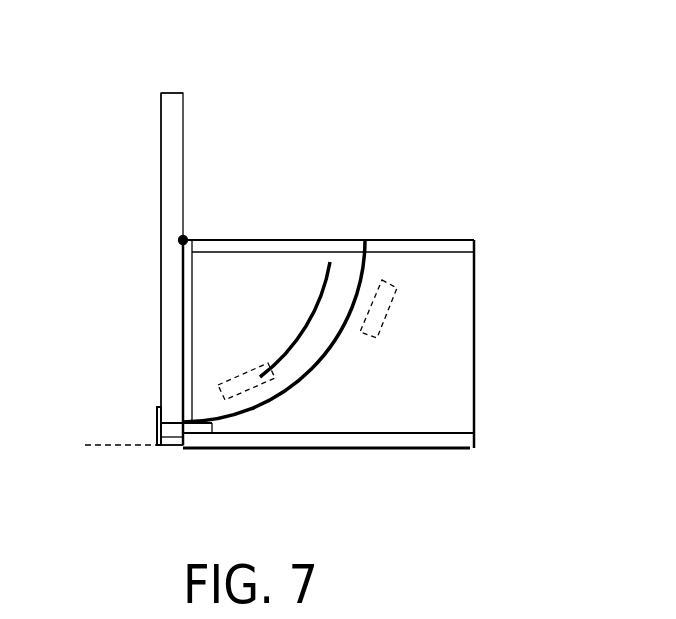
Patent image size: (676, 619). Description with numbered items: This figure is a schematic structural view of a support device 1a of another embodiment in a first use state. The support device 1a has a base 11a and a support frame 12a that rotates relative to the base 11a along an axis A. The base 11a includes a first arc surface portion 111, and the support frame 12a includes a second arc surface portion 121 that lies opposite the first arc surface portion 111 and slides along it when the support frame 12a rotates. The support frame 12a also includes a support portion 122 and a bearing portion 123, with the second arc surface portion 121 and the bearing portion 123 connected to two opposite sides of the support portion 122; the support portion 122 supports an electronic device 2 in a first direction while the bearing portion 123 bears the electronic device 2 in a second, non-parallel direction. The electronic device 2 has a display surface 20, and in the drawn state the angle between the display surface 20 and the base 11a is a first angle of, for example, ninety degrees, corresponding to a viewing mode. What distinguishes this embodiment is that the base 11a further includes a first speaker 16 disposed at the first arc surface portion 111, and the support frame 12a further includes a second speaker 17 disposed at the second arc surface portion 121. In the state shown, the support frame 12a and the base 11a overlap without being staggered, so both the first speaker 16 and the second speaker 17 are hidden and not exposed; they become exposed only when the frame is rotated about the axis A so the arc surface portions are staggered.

The electronic device 2 is at (172, 105).
The display surface 20 is at (160, 145).
The support device 1a is at (474, 192).
The base 11a is at (448, 350).
The support frame 12a is at (238, 262).
The support portion 122 is at (282, 262).
The second arc surface portion 121 is at (358, 276).
The first arc surface portion 111 is at (300, 384).
The first speaker 16 is at (397, 300).
The second speaker 17 is at (228, 378).
The bearing portion 123 is at (172, 440).
The axis A is at (180, 240).